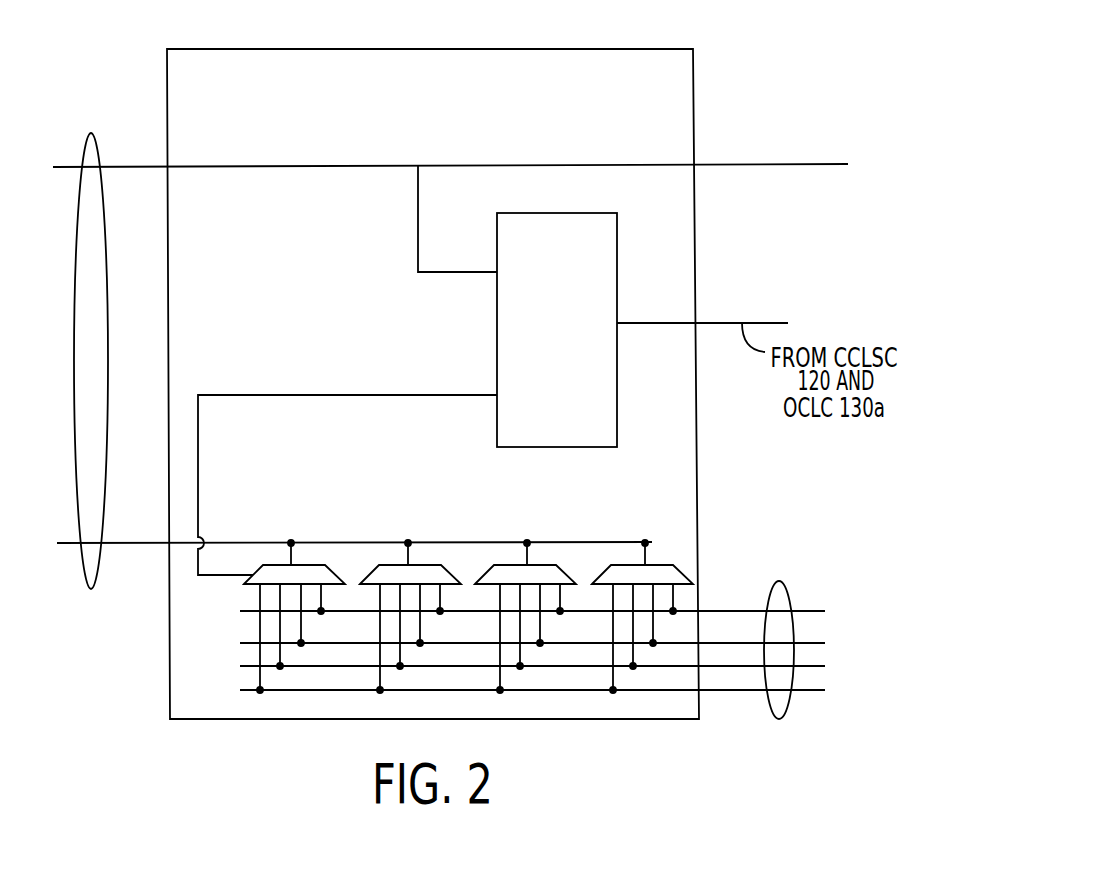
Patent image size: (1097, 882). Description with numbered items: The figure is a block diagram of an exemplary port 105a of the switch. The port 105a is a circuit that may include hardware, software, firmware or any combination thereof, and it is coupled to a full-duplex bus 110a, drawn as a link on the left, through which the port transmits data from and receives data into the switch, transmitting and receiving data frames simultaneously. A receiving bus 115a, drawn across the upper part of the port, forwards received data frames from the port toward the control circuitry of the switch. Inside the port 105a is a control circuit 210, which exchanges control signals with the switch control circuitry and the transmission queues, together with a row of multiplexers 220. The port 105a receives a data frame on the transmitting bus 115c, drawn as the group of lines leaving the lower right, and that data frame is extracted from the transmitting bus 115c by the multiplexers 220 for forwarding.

The port 105a is at (662, 49).
The bus 110a is at (90, 136).
The receiving bus 115a is at (780, 164).
The control circuit 210 is at (553, 213).
The multiplexers 220 is at (310, 565).
The transmitting bus 115c is at (770, 703).